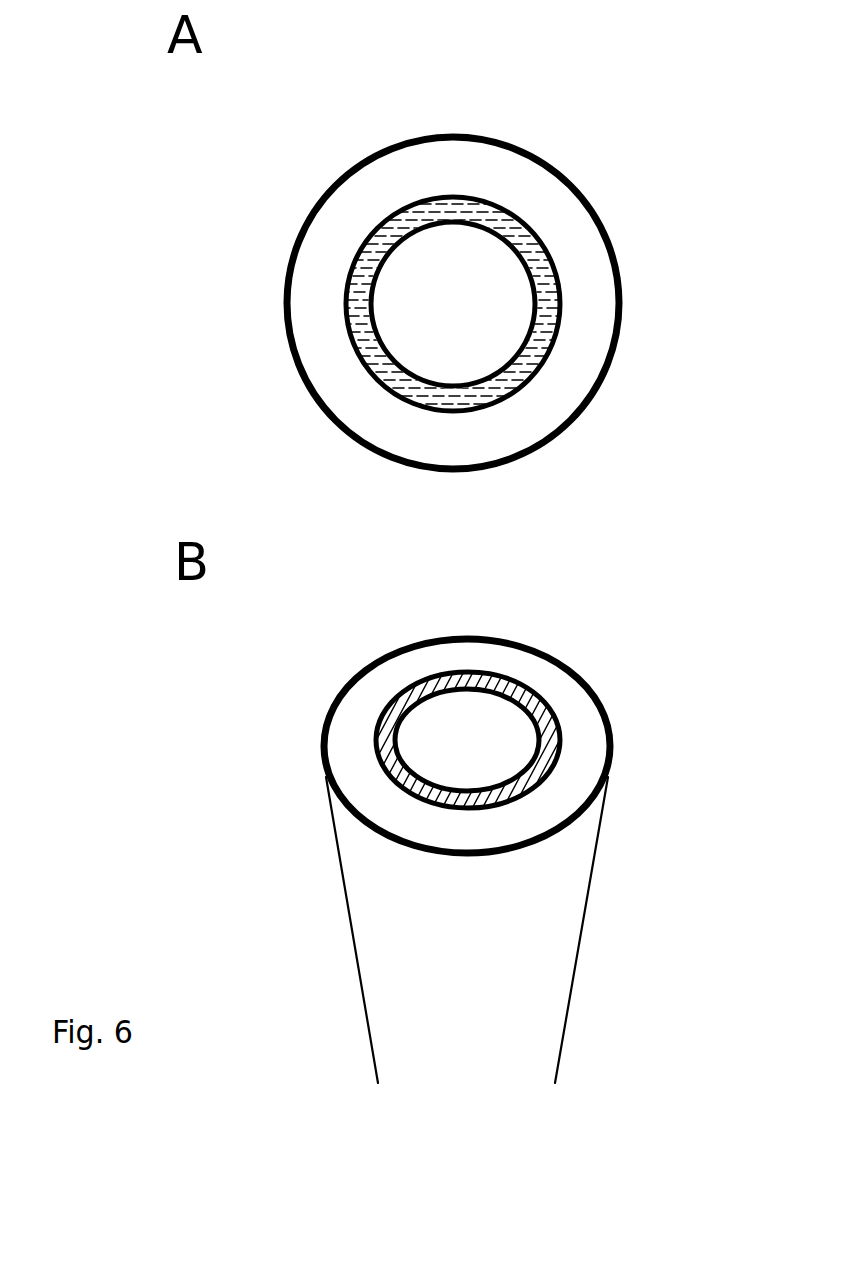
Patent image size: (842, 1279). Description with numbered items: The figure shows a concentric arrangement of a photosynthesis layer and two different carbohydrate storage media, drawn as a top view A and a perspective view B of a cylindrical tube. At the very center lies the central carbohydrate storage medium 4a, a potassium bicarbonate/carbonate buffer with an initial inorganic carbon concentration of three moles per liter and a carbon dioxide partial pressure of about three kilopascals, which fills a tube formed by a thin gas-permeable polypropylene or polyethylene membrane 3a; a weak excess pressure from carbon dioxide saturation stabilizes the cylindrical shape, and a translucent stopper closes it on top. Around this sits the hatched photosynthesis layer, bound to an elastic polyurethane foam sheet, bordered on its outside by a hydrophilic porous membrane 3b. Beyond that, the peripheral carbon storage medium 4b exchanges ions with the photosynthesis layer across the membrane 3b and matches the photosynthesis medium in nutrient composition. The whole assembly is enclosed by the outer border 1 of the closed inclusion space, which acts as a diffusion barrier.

The outer border of the closed inclusion space 1 is at (627, 318).
The substrate permeable membrane 3a is at (380, 253).
The hydrophilic porous membrane 3b is at (508, 208).
The central carbohydrate storage medium 4a is at (422, 335).
The peripheral carbon storage medium 4b is at (587, 258).